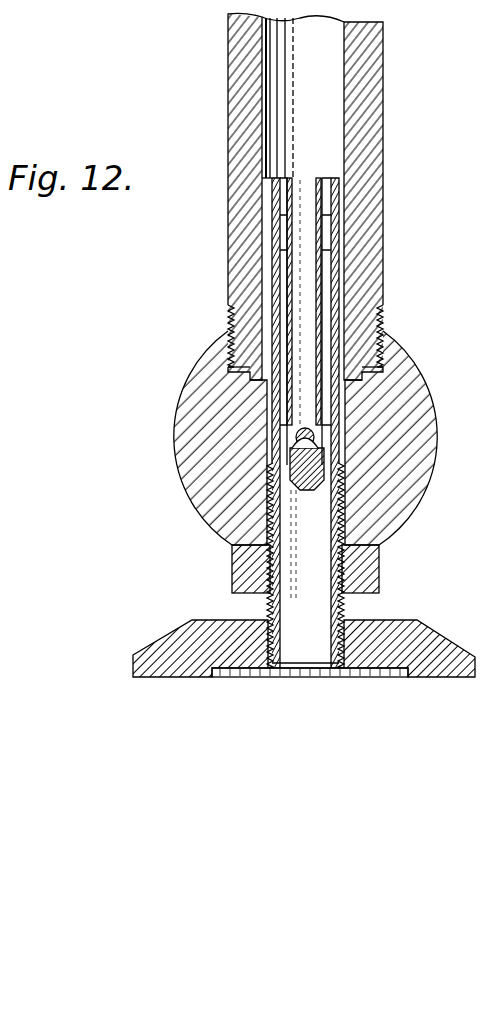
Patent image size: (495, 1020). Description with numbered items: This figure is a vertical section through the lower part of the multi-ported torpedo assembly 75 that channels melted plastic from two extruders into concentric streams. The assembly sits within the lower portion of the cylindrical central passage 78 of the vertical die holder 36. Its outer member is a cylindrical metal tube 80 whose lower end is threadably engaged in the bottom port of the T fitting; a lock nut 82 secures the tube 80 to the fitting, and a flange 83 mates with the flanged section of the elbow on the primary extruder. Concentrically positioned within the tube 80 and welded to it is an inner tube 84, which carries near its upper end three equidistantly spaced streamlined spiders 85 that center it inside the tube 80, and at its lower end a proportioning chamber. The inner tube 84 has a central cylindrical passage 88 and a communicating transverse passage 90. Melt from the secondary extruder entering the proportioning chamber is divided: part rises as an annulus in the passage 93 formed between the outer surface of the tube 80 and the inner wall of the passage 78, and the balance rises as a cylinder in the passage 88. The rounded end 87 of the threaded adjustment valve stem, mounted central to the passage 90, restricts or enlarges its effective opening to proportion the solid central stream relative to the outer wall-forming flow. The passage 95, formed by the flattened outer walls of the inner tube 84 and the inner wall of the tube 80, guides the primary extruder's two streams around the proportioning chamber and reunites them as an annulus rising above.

The die holder 36 is at (373, 165).
The torpedo assembly 75 is at (347, 302).
The central passage 78 is at (322, 125).
The cylindrical metal tube 80 is at (232, 214).
The lock nut 82 is at (250, 574).
The flange 83 is at (167, 636).
The inner tube 84 is at (270, 172).
The streamlined spiders 85 is at (326, 227).
The rounded end 87 is at (316, 436).
The central cylindrical passage 88 is at (297, 183).
The transverse passage 90 is at (300, 420).
The annular passage 93 is at (269, 274).
The passage 95 is at (280, 302).